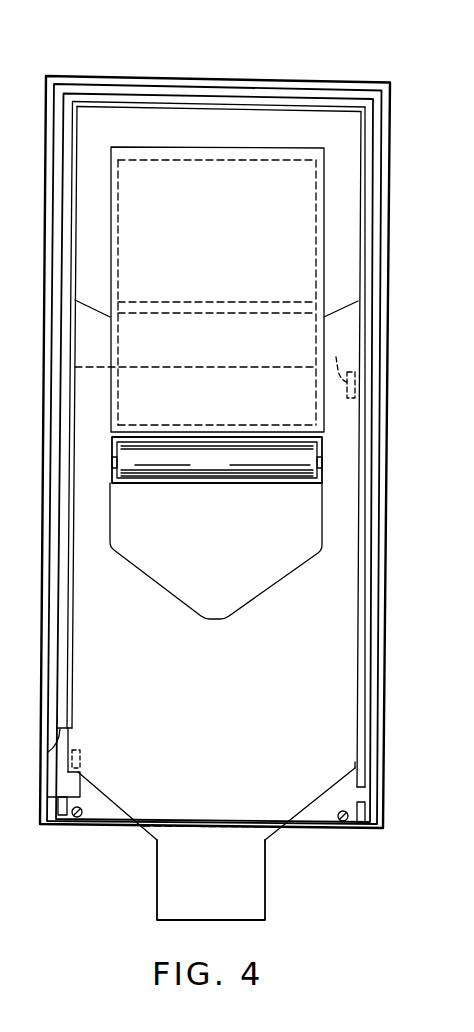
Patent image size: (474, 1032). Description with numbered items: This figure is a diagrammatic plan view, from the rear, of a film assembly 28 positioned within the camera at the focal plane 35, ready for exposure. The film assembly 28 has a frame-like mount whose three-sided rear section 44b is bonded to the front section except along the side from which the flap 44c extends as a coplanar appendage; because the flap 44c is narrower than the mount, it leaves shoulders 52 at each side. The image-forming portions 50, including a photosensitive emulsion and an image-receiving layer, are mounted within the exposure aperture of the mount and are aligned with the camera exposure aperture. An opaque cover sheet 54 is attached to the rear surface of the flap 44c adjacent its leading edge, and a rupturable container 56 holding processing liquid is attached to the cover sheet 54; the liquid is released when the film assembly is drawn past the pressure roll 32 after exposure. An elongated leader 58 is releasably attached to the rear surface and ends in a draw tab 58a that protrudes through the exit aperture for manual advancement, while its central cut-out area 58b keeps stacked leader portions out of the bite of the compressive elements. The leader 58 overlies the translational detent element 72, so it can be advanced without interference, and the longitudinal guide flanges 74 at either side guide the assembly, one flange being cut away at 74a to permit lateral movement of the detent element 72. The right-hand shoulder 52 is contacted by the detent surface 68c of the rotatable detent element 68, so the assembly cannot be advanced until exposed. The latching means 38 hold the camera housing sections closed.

The film assembly 28 is at (346, 228).
The pressure roll 32 is at (245, 458).
The focal plane 35 is at (0, 283).
The latching means 38 is at (76, 827).
The rear section 44b is at (226, 124).
The flap 44c is at (305, 413).
The image-forming portions 50 is at (320, 193).
The shoulders 52 is at (96, 366).
The opaque cover sheet 54 is at (261, 149).
The rupturable container 56 is at (156, 403).
The leader 58 is at (216, 766).
The draw tab 58a is at (266, 916).
The central cut-out area 58b is at (167, 587).
The detent element 68 is at (342, 367).
The detent surface 68c is at (352, 372).
The detent element 72 is at (72, 773).
The longitudinal guide flanges 74 is at (72, 682).
The cut-away 74a is at (55, 755).